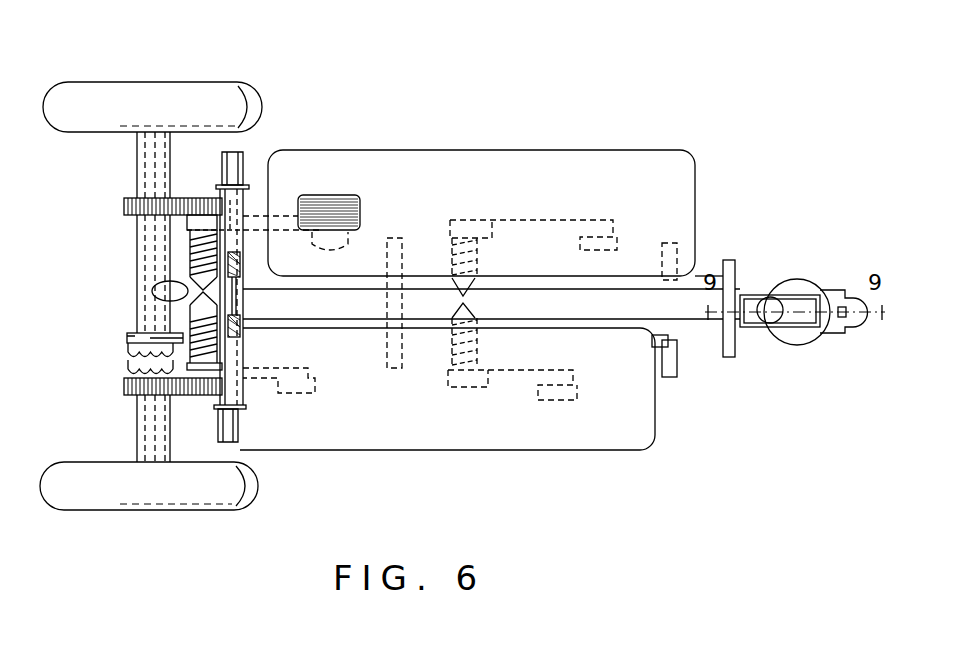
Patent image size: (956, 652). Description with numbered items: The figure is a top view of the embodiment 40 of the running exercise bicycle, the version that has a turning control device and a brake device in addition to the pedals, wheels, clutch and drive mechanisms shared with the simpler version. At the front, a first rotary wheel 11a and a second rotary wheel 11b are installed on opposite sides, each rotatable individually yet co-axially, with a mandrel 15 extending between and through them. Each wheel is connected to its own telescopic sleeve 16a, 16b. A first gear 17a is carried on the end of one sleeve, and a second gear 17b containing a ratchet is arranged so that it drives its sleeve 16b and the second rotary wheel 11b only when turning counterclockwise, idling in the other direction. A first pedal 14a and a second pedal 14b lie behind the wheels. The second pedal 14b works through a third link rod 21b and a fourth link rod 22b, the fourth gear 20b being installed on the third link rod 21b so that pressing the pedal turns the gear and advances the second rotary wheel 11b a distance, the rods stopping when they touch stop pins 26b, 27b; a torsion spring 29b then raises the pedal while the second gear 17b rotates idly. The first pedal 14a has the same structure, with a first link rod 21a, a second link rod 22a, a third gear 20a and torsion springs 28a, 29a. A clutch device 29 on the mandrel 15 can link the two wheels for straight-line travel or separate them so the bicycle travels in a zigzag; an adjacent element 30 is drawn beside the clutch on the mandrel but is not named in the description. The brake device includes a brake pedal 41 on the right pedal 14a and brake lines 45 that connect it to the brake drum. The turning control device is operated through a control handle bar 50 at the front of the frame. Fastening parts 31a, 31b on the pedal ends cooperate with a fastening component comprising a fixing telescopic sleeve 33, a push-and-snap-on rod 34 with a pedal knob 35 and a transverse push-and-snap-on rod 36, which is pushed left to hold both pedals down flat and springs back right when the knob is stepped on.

The first rotary wheel 11a is at (165, 90).
The second rotary wheel 11b is at (122, 510).
The mandrel 15 is at (150, 146).
The telescopic sleeve 16a is at (140, 172).
The telescopic sleeve 16b is at (137, 430).
The first gear 17a is at (124, 207).
The second gear 17b is at (123, 387).
The third gear 20a is at (190, 200).
The fourth gear 20b is at (198, 393).
The first link rod 21a is at (253, 213).
The third link rod 21b is at (258, 382).
The second link rod 22a is at (553, 225).
The fourth link rod 22b is at (510, 392).
The stop pin 26b is at (395, 368).
The stop pin 27b is at (668, 378).
The torsion spring 28a is at (190, 243).
The clutch device 29 is at (128, 352).
The torsion spring 29a is at (478, 258).
The torsion spring 29b is at (477, 345).
The pawl plate 30 is at (150, 333).
The fastening part 31a is at (700, 262).
The fastening part 31b is at (677, 345).
The fixing telescopic sleeve 33 is at (802, 325).
The push-and-snap-on rod 34 is at (833, 297).
The pedal knob 35 is at (773, 296).
The transverse push-and-snap-on rod 36 is at (737, 260).
The running exercise bicycle embodiment 40 is at (590, 122).
The brake pedal 41 is at (337, 195).
The brake lines 45 is at (357, 245).
The control handle bar 50 is at (232, 298).
The first pedal 14a is at (455, 172).
The second pedal 14b is at (434, 450).